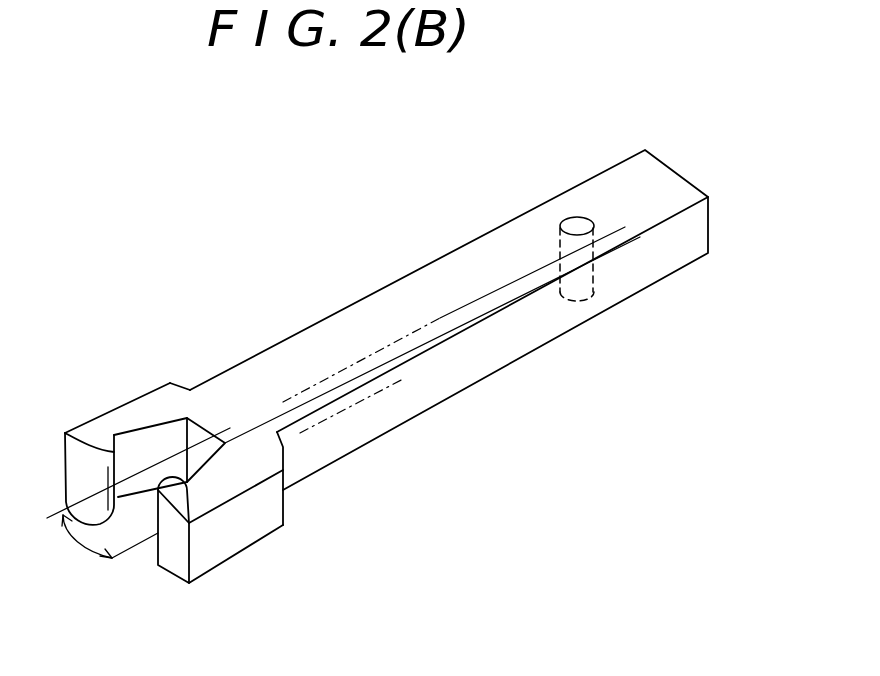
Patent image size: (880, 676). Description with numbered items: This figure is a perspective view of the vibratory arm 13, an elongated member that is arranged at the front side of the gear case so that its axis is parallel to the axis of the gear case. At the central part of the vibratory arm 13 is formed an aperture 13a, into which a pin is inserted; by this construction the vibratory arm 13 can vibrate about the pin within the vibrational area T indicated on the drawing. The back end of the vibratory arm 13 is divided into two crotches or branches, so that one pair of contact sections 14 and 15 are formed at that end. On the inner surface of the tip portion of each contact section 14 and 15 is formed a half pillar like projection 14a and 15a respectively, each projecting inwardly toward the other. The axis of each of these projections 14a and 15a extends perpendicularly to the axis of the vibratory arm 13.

The vibratory arm 13 is at (500, 347).
The aperture 13a is at (577, 224).
The contact section 14 is at (148, 405).
The half pillar like projection 14a is at (103, 446).
The contact section 15 is at (215, 467).
The half pillar like projection 15a is at (173, 497).
The vibrational area T is at (367, 373).